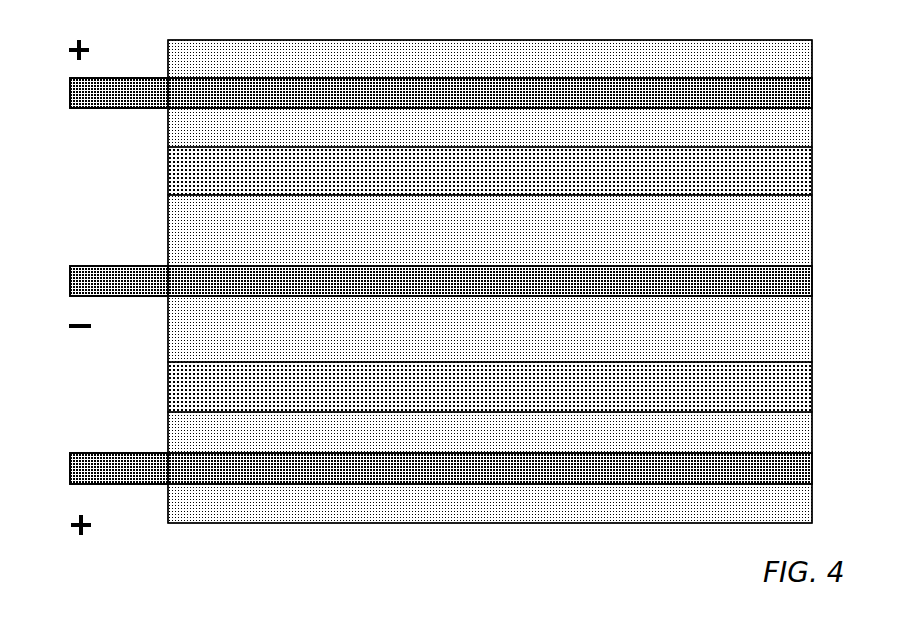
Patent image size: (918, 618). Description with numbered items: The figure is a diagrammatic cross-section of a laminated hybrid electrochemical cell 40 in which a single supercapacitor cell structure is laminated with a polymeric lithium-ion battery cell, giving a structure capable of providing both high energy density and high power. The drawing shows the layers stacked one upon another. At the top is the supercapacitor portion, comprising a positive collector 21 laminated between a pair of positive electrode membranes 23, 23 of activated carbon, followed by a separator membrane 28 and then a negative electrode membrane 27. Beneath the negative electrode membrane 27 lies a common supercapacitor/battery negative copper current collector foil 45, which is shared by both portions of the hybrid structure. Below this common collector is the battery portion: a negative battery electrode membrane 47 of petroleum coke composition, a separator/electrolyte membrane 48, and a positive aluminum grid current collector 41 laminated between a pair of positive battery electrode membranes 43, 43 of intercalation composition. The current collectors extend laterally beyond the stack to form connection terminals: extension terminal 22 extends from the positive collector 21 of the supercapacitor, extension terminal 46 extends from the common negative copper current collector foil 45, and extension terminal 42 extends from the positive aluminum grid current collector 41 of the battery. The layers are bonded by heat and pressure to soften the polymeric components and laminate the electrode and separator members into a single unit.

The hybrid cell 40 is at (326, 548).
The positive collector 21 is at (812, 98).
The extension terminal 22 is at (70, 92).
The positive electrode membranes 23 is at (812, 62).
The negative electrode membrane 27 is at (812, 236).
The separator membrane 28 is at (808, 172).
The positive aluminum grid current collector 41 is at (812, 474).
The extension terminal 42 is at (72, 470).
The positive battery electrode membranes 43 is at (808, 447).
The common supercapacitor/battery negative copper current collector foil 45 is at (812, 283).
The extension terminal 46 is at (70, 287).
The negative battery electrode membrane 47 is at (806, 332).
The separator/electrolyte membrane 48 is at (806, 392).